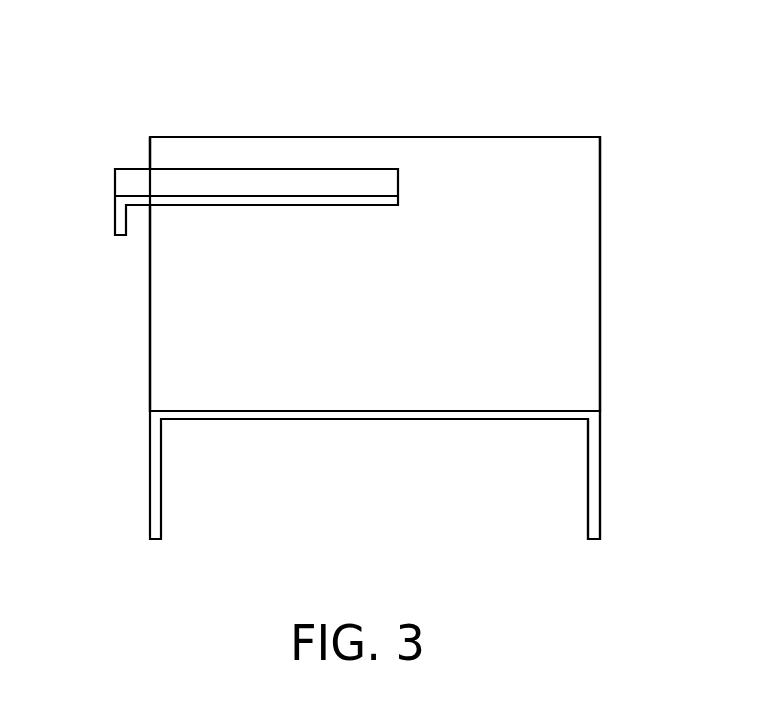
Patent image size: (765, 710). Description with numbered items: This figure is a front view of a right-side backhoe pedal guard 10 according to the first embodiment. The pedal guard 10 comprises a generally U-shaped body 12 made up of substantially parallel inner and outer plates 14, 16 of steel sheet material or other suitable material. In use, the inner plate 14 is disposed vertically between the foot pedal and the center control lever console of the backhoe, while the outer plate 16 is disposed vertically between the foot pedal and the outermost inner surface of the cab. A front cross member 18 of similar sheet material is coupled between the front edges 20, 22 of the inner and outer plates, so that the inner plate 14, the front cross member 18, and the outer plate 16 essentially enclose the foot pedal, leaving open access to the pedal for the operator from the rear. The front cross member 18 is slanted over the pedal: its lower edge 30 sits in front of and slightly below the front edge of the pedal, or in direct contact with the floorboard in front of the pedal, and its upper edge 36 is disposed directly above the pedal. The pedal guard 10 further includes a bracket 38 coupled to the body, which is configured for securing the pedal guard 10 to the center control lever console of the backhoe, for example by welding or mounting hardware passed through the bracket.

The pedal guard 10 is at (213, 81).
The body 12 is at (573, 190).
The inner plate 14 is at (139, 382).
The outer plate 16 is at (612, 432).
The front cross member 18 is at (520, 276).
The front edge of inner plate 20 is at (150, 300).
The front edge of outer plate 22 is at (601, 346).
The lower edge 30 is at (465, 413).
The upper edge 36 is at (443, 127).
The bracket 38 is at (268, 183).